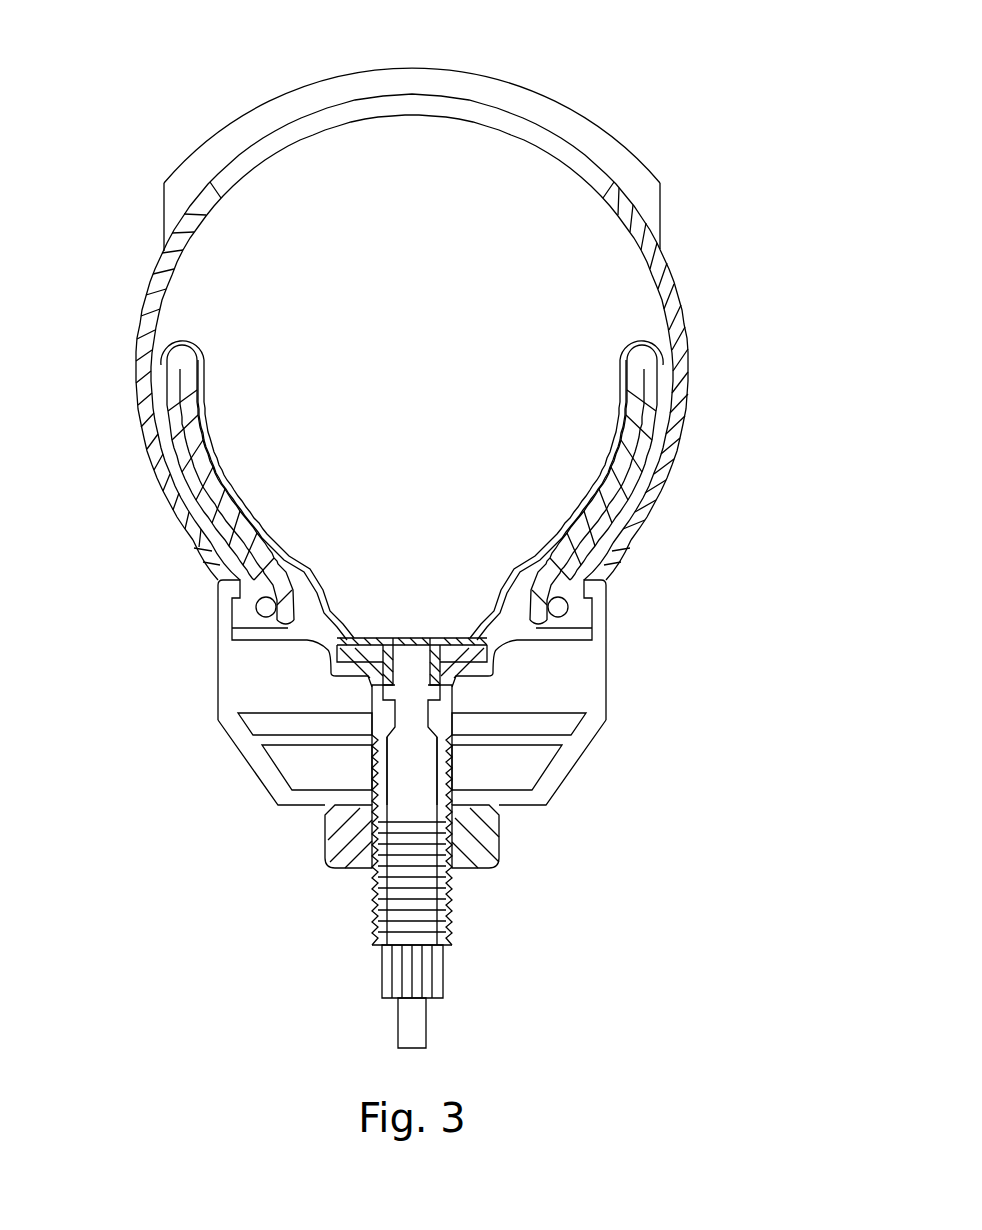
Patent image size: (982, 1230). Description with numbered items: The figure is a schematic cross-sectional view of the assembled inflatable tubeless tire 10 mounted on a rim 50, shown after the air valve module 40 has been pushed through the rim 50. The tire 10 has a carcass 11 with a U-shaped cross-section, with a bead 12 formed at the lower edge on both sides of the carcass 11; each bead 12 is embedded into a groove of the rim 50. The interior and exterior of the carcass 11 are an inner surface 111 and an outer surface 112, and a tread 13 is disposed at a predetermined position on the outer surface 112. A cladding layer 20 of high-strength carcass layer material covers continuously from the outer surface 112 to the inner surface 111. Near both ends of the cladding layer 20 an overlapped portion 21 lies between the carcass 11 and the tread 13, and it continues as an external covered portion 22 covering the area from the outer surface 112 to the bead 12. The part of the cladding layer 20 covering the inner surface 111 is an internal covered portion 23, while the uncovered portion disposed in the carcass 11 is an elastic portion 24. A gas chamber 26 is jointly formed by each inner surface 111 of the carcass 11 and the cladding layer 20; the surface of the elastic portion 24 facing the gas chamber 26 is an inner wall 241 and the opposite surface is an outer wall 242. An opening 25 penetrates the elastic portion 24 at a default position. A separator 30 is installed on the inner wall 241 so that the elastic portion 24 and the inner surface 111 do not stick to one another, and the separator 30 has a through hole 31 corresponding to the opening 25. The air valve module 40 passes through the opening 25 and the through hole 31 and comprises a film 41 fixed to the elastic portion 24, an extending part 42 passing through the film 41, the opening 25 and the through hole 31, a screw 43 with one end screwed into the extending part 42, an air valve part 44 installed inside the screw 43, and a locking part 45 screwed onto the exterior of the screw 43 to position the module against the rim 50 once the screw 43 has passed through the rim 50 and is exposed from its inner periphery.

The inflatable tubeless tire 10 is at (283, 78).
The carcass 11 is at (158, 390).
The inner surface 111 is at (183, 287).
The outer surface 112 is at (157, 480).
The bead 12 is at (250, 622).
The tread 13 is at (170, 195).
The cladding layer 20 is at (762, 565).
The overlapped portion 21 is at (657, 223).
The external covered portion 22 is at (678, 392).
The internal covered portion 23 is at (605, 510).
The elastic portion 24 is at (613, 466).
The inner wall 241 is at (612, 418).
The outer wall 242 is at (620, 482).
The opening 25 is at (437, 640).
The gas chamber 26 is at (617, 270).
The separator 30 is at (249, 489).
The through hole 31 is at (410, 640).
The air valve module 40 is at (668, 630).
The film 41 is at (480, 670).
The extending part 42 is at (453, 683).
The screw 43 is at (448, 722).
The air valve part 44 is at (428, 778).
The locking part 45 is at (490, 837).
The rim 50 is at (243, 767).